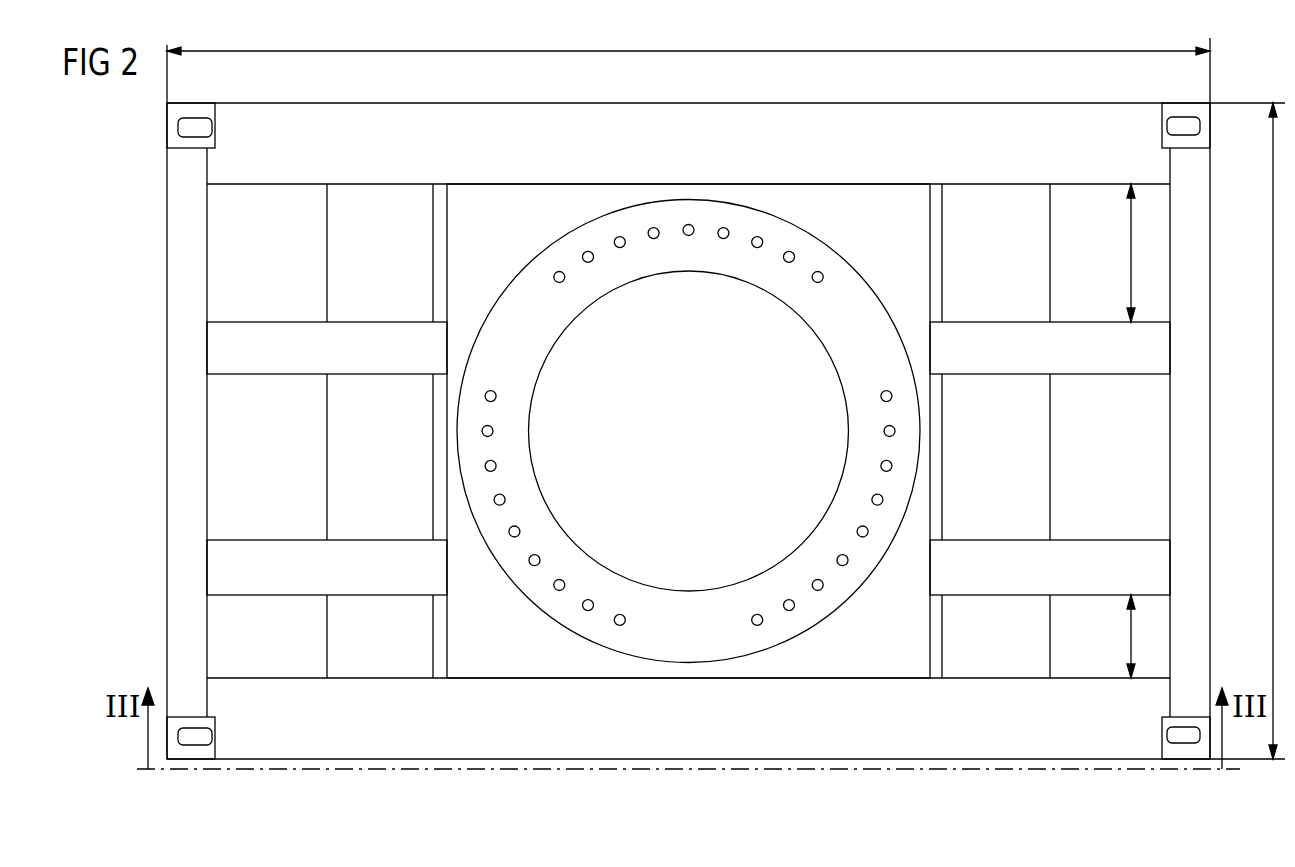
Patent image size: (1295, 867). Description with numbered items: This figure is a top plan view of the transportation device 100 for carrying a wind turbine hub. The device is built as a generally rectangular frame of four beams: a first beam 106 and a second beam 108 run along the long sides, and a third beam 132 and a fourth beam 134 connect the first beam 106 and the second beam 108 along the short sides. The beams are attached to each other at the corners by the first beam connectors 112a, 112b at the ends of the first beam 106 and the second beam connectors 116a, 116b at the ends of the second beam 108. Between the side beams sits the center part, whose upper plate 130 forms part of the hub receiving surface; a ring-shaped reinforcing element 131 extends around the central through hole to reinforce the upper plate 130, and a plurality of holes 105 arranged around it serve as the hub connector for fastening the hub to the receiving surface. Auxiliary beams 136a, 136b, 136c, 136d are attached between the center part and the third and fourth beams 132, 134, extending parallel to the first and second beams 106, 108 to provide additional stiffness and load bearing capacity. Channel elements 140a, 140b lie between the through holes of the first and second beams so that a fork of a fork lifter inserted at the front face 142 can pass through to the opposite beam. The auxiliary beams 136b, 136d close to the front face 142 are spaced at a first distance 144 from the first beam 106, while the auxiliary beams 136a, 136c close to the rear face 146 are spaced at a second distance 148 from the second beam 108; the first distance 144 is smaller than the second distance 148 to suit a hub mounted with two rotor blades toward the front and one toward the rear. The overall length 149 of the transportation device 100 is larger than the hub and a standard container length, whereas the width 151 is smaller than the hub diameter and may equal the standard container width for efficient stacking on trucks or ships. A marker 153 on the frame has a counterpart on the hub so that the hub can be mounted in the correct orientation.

The transportation device 100 is at (150, 287).
The holes 105 is at (588, 263).
The first beam 106 is at (867, 748).
The second beam 108 is at (838, 112).
The first beam connector 112a is at (1172, 748).
The first beam connector 112b is at (212, 722).
The second beam connector 116a is at (1165, 112).
The second beam connector 116b is at (214, 112).
The upper plate 130 is at (812, 192).
The reinforcing element 131 is at (697, 210).
The third beam 132 is at (178, 383).
The fourth beam 134 is at (1198, 268).
The auxiliary beam 136a is at (997, 327).
The auxiliary beam 136b is at (987, 585).
The auxiliary beam 136c is at (250, 330).
The auxiliary beam 136d is at (250, 587).
The channel element 140a is at (335, 252).
The channel element 140b is at (1040, 435).
The front face 142 is at (537, 760).
The first distance 144 is at (1130, 640).
The rear face 146 is at (296, 103).
The second distance 148 is at (1130, 252).
The length 149 is at (462, 52).
The width 151 is at (1273, 200).
The marker 153 is at (700, 710).